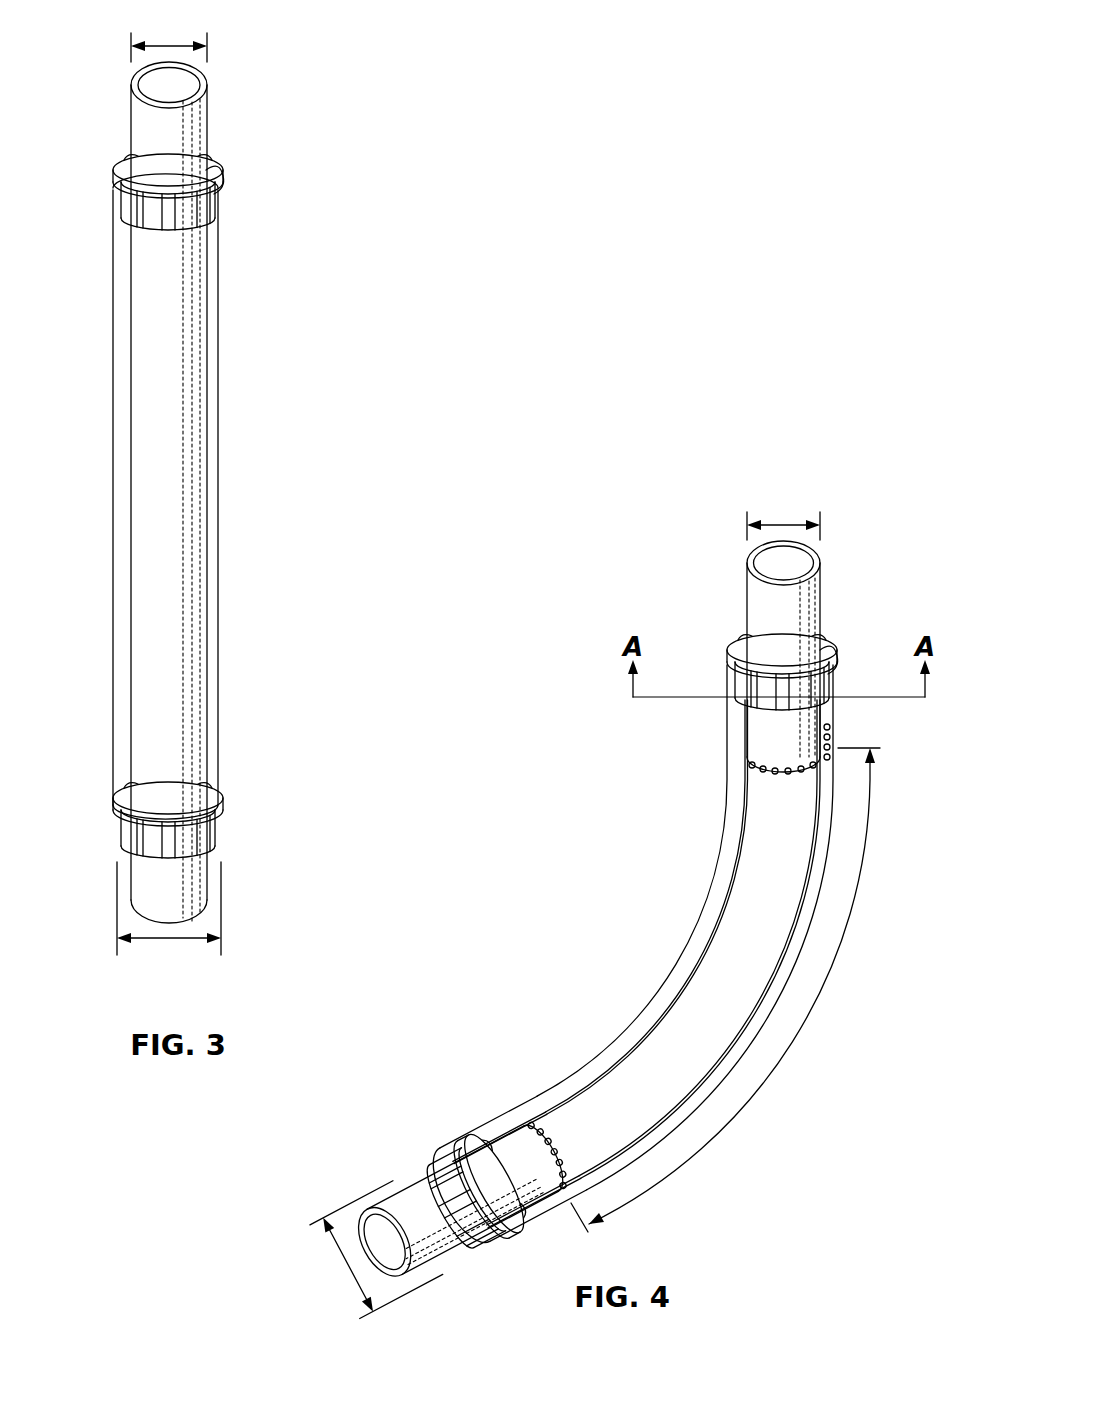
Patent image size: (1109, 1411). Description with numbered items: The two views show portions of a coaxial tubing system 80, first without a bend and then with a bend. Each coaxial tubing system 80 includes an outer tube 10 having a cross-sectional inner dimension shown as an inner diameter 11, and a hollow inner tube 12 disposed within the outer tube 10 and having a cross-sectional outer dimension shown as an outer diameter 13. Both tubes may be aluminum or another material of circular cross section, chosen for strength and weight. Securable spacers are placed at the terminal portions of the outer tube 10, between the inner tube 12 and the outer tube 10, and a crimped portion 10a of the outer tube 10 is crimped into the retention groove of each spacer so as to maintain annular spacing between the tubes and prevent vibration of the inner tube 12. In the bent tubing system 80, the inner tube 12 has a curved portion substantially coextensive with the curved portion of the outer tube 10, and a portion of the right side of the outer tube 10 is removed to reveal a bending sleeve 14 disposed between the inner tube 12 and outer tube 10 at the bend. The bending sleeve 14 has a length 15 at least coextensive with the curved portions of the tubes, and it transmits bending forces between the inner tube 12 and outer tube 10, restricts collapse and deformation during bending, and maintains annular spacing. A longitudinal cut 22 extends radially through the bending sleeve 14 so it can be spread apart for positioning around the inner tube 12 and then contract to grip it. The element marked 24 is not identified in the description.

In FIG. 3, the coaxial tubing system 80 is at (82, 398).
In FIG. 4, the coaxial tubing system 80 is at (680, 870).
In FIG. 3, the outer tube 10 is at (121, 752).
In FIG. 4, the outer tube 10 is at (472, 1134).
In FIG. 3, the crimped portion 10a is at (122, 188).
In FIG. 4, the crimped portion 10a is at (746, 670).
In FIG. 3, the inner diameter 11 is at (163, 940).
In FIG. 4, the inner diameter 11 is at (345, 1265).
In FIG. 3, the inner tube 12 is at (207, 863).
In FIG. 4, the inner tube 12 is at (443, 1258).
In FIG. 3, the outer diameter 13 is at (170, 46).
In FIG. 4, the outer diameter 13 is at (786, 525).
In FIG. 4, the bending sleeve 14 is at (708, 1005).
In FIG. 4, the length 15 is at (812, 1015).
In FIG. 4, the longitudinal cut 22 is at (803, 893).
In FIG. 3, the lug 24 is at (222, 190).
In FIG. 4, the lug 24 is at (838, 676).